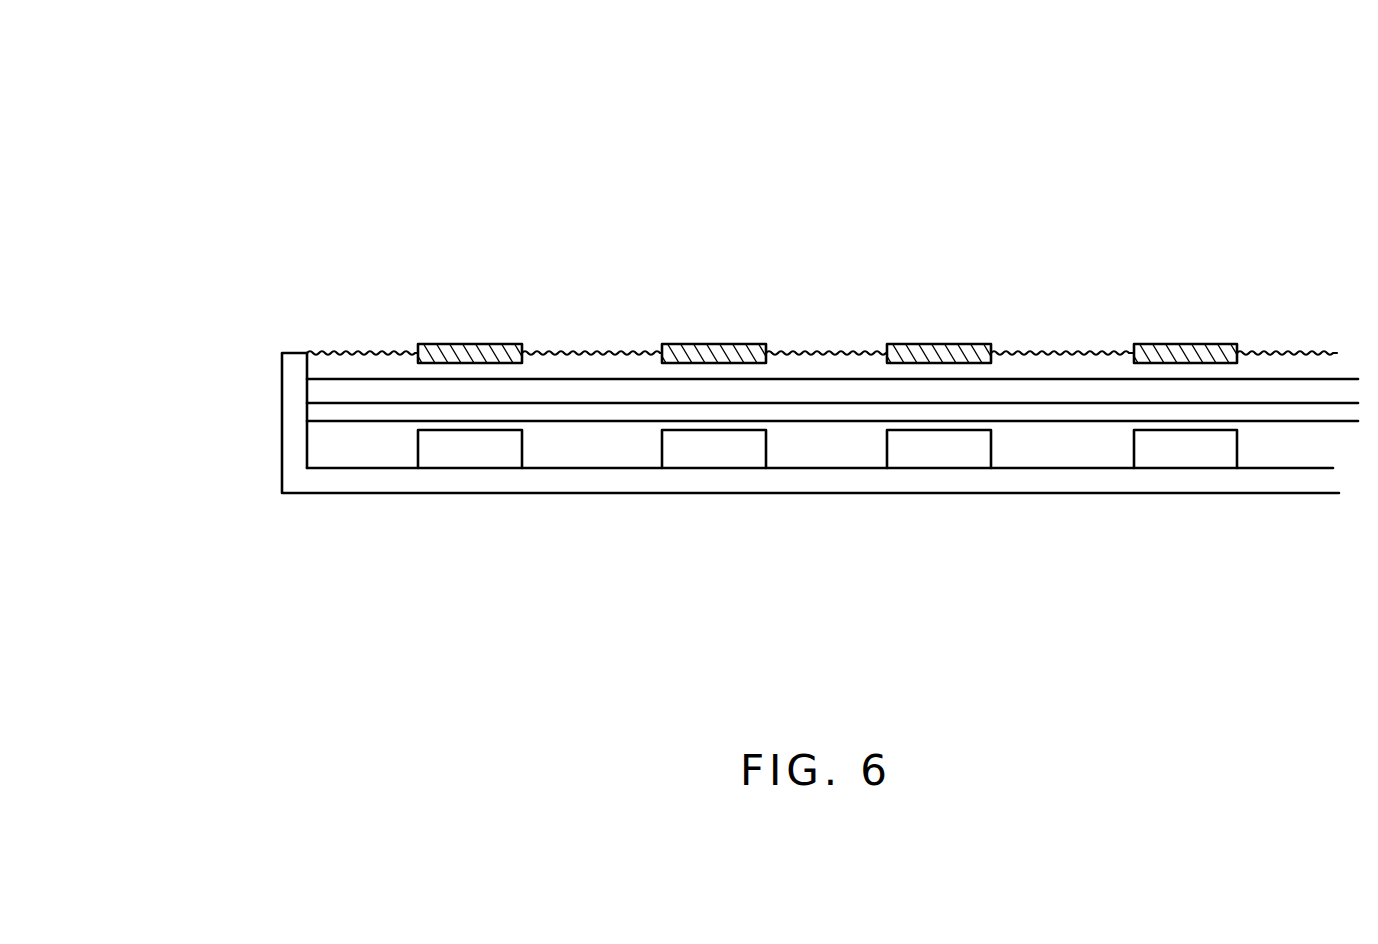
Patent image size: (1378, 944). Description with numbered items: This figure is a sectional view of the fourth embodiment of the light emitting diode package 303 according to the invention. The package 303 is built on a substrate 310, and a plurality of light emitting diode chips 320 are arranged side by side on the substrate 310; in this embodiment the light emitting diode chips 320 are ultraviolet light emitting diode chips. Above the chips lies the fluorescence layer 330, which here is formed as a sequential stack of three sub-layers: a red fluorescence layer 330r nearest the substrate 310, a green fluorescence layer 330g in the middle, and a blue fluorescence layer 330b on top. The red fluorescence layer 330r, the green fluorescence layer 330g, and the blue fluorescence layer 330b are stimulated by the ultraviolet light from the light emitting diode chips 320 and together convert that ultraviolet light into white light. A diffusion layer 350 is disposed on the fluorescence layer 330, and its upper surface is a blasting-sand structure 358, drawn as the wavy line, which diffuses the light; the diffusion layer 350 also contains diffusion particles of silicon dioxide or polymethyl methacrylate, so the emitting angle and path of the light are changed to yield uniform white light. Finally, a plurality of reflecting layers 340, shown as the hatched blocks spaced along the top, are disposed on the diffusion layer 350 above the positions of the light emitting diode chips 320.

The display panel 303 is at (1158, 146).
The substrate 310 is at (382, 482).
The light emitting diode chips 320 is at (718, 450).
The fluorescence layer 330 is at (172, 388).
The blue fluorescence layer 330b is at (320, 388).
The green fluorescence layer 330g is at (320, 412).
The red fluorescence layer 330r is at (320, 450).
The reflecting layers 340 is at (702, 358).
The diffusion layer 350 is at (553, 372).
The blasting-sand structure 358 is at (610, 355).